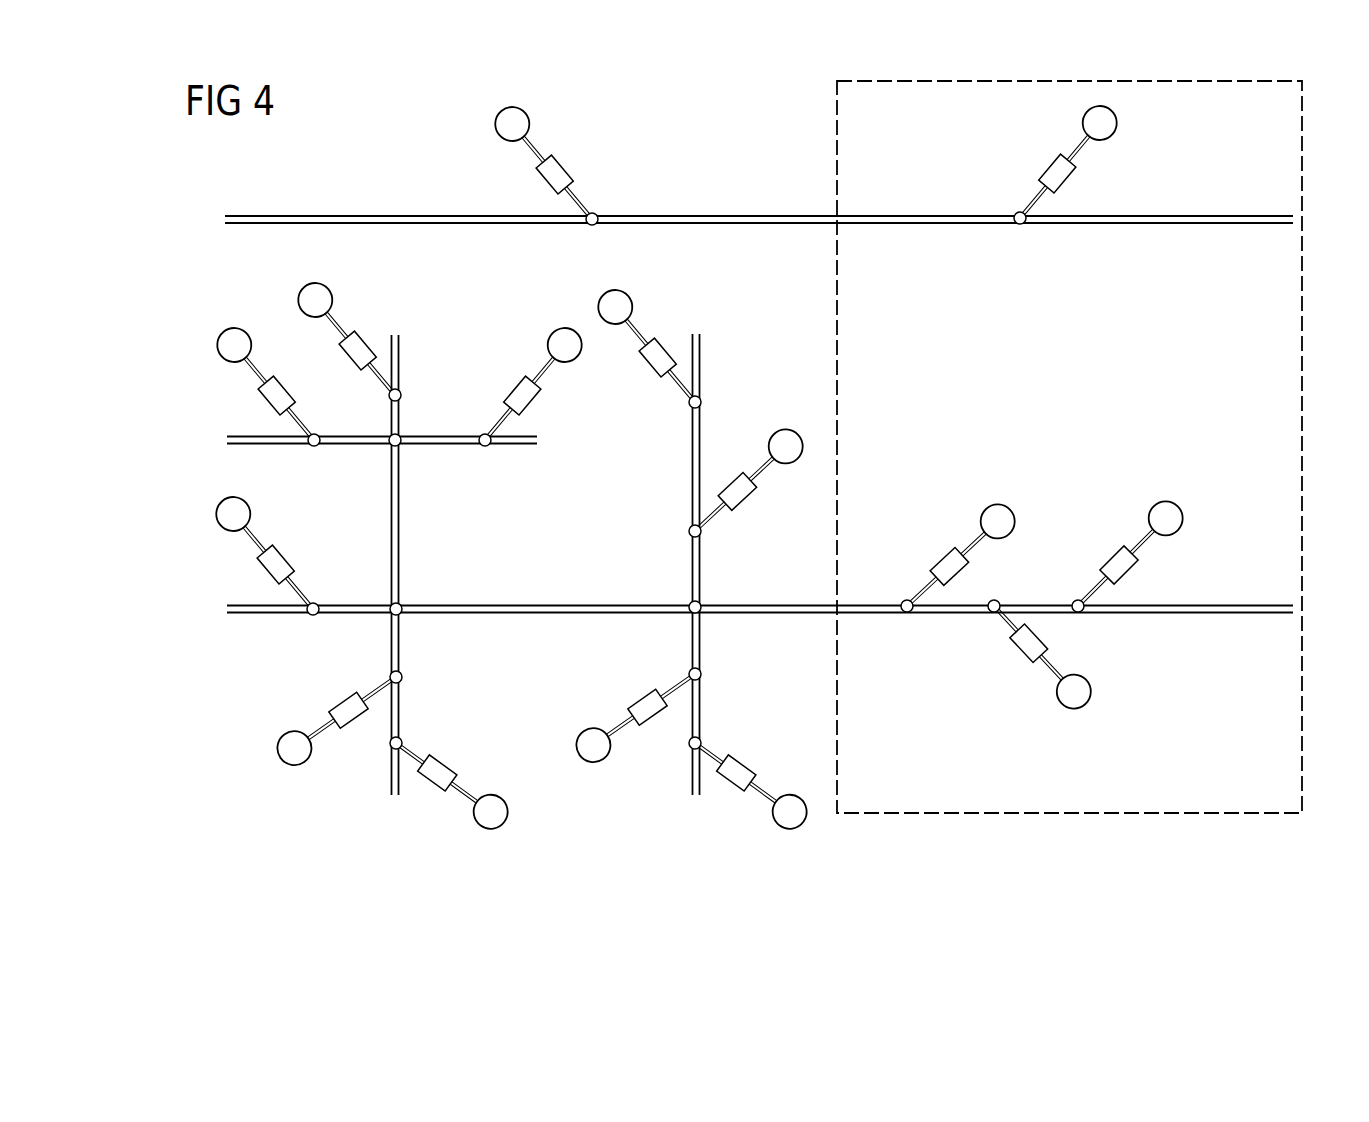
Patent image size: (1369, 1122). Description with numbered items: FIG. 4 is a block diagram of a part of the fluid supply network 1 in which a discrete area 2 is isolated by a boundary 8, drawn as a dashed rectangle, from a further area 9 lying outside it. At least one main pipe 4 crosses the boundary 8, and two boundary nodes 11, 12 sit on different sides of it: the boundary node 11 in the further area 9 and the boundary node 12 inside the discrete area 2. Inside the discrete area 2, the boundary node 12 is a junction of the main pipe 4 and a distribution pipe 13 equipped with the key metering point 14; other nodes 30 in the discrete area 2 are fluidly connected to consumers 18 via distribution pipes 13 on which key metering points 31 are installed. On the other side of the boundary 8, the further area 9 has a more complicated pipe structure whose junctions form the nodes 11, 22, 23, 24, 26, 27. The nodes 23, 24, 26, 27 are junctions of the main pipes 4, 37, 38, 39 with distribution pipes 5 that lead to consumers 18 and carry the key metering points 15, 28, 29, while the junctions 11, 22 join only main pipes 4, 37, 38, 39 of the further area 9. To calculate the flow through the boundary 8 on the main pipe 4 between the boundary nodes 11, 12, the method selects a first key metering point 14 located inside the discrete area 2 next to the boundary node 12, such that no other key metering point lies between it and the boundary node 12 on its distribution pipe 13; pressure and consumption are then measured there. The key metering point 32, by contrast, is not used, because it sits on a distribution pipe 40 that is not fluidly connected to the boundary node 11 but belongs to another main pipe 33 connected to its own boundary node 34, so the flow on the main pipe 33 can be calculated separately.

The supply network 1 is at (731, 490).
The discrete area 2 is at (1069, 490).
The main pipe 4 is at (520, 604).
The distribution pipe 5 is at (712, 519).
The boundary 8 is at (838, 318).
The further area 9 is at (568, 847).
The boundary node 11 is at (702, 614).
The boundary node 12 is at (905, 614).
The distribution pipe 13 is at (922, 590).
The key metering point 14 is at (952, 552).
The key metering point 15 is at (262, 403).
The consumer 18 is at (495, 124).
The node 22 is at (402, 447).
The node 23 is at (312, 448).
The node 24 is at (689, 532).
The node 26 is at (403, 740).
The node 27 is at (703, 400).
The key metering point 28 is at (430, 788).
The key metering point 29 is at (650, 374).
The node 30 is at (998, 600).
The key metering point 31 is at (1018, 652).
The key metering point 32 is at (540, 180).
The main pipe 33 is at (745, 216).
The boundary node 34 is at (590, 228).
The main pipe 37 is at (692, 463).
The main pipe 38 is at (399, 543).
The main pipe 39 is at (437, 436).
The distribution pipe 40 is at (580, 198).